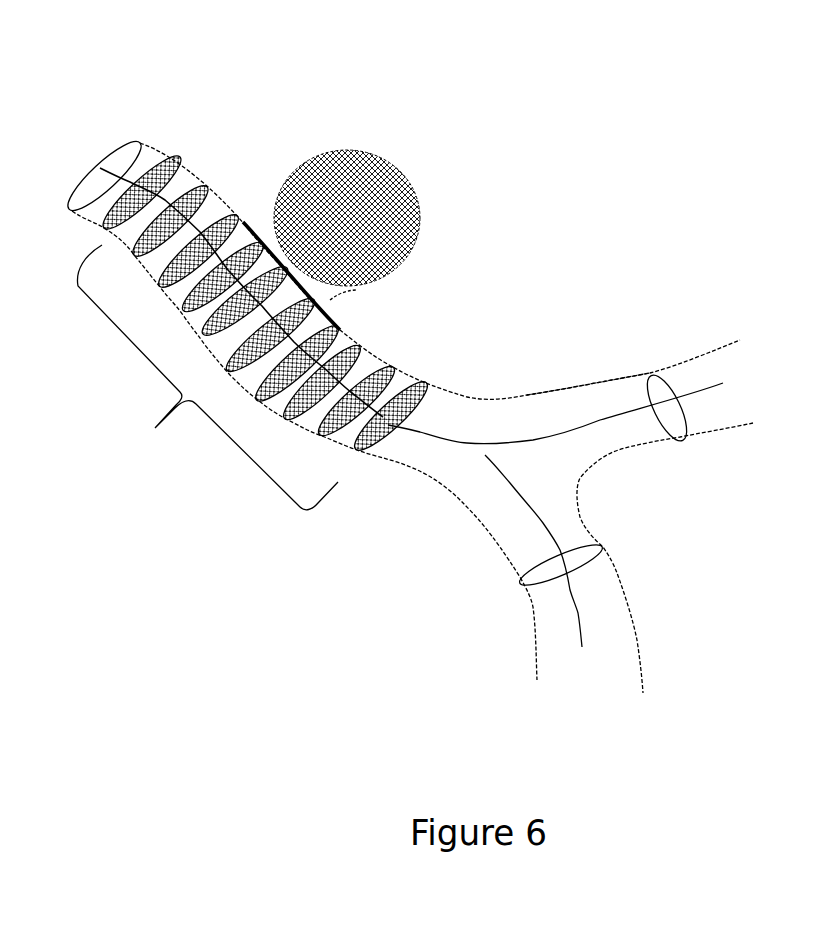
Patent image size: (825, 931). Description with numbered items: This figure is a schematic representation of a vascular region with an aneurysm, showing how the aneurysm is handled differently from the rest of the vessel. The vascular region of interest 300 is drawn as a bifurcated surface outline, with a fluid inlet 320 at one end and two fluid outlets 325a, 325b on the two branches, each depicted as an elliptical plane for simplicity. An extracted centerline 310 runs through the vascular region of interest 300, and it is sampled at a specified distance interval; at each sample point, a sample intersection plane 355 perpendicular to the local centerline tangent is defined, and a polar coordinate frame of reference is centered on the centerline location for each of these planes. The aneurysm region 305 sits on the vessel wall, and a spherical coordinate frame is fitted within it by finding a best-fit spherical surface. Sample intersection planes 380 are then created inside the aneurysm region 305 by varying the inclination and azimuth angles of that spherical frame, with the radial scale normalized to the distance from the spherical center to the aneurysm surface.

The vascular region of interest 300 is at (317, 538).
The aneurysm region 305 is at (437, 208).
The extracted centerline 310 is at (550, 427).
The fluid inlet 320 is at (145, 131).
The first fluid outlet 325a is at (660, 369).
The second fluid outlet 325b is at (608, 547).
The sample intersection planes 355 is at (207, 377).
The spherical sample intersection planes 380 is at (352, 200).